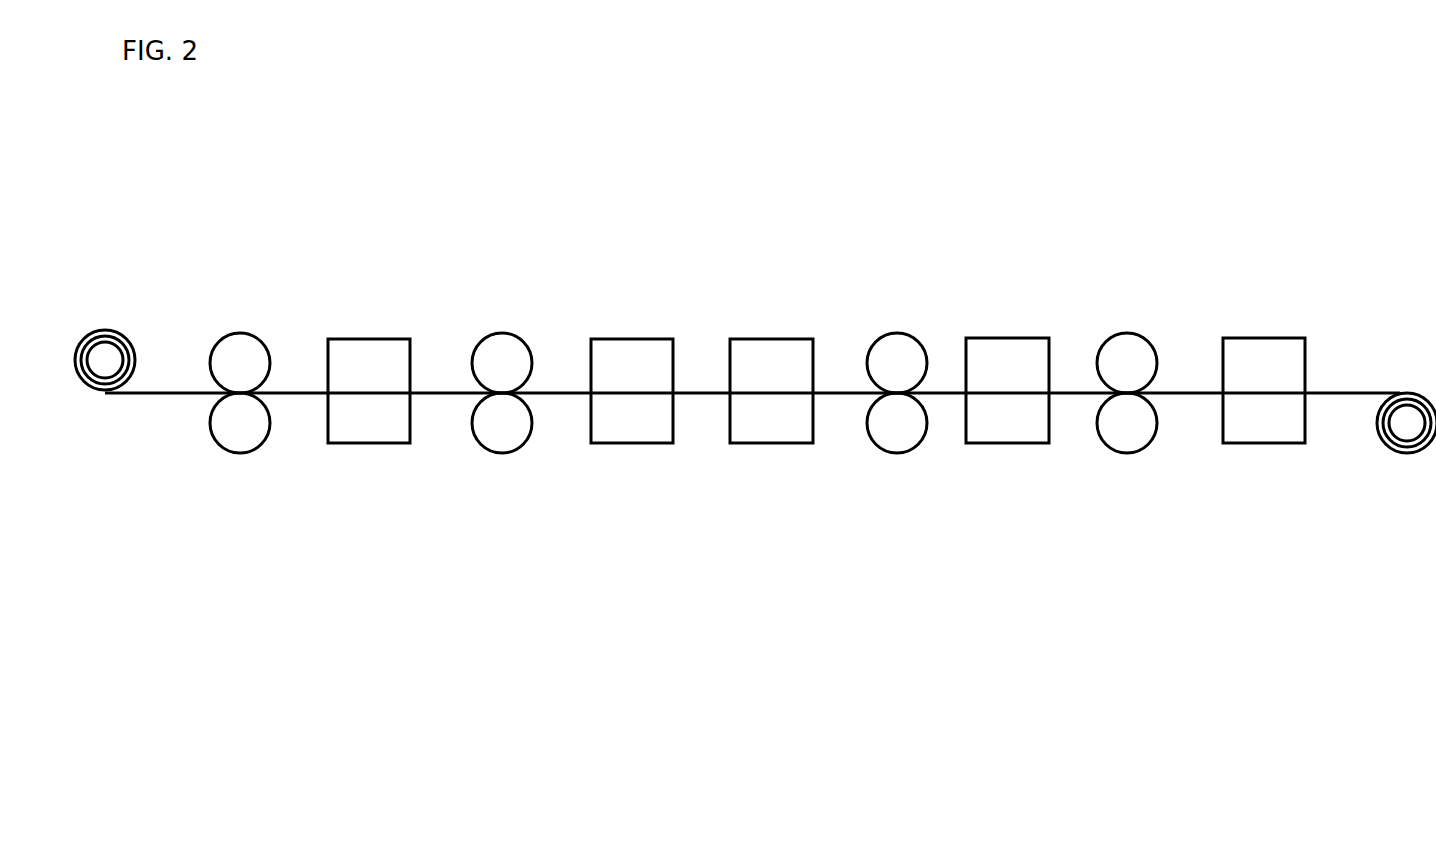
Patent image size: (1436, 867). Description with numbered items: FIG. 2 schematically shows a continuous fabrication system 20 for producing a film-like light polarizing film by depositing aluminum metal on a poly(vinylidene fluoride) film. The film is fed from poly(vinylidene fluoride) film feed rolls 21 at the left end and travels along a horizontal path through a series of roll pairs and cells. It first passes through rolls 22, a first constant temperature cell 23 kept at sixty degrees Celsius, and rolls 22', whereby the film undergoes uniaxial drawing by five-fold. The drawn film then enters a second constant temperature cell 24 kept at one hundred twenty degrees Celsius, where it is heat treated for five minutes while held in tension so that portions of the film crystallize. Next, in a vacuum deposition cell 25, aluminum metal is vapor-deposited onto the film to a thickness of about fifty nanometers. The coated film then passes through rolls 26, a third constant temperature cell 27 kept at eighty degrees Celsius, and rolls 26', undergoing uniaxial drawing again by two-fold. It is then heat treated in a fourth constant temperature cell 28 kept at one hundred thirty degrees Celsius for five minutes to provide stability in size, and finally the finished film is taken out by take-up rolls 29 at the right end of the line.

The continuous fabrication system 20 is at (655, 232).
The poly(vinylidene fluoride) film feed rolls 21 is at (102, 360).
The rolls 22 is at (240, 354).
The rolls 22' is at (502, 355).
The first constant temperature cell 23 is at (363, 435).
The second constant temperature cell 24 is at (632, 431).
The vacuum deposition cell 25 is at (770, 430).
The rolls 26 is at (897, 356).
The rolls 26' is at (1127, 357).
The third constant temperature cell 27 is at (1007, 428).
The fourth constant temperature cell 28 is at (1265, 432).
The take-up rolls 29 is at (1405, 412).